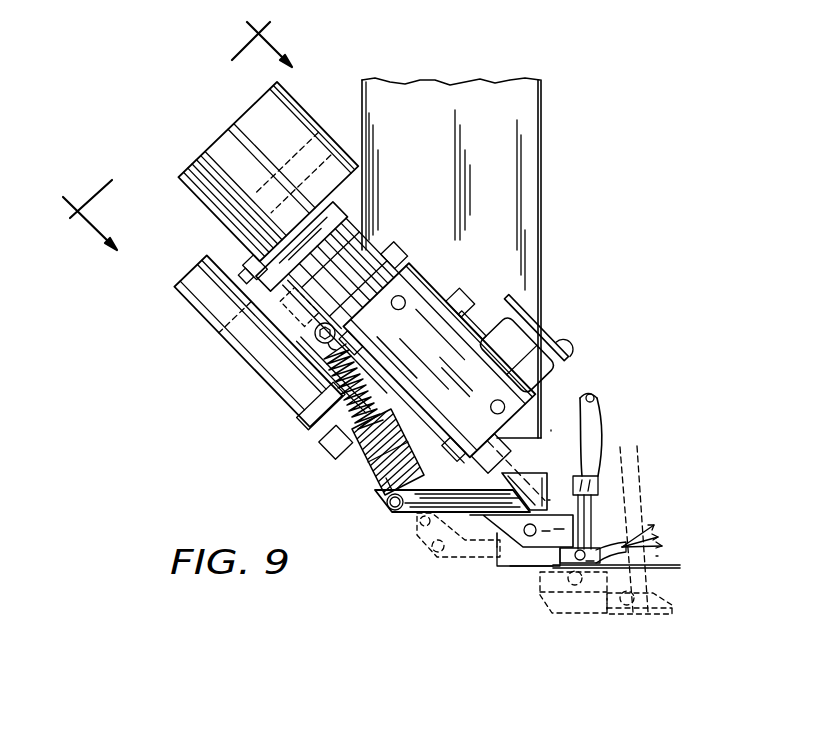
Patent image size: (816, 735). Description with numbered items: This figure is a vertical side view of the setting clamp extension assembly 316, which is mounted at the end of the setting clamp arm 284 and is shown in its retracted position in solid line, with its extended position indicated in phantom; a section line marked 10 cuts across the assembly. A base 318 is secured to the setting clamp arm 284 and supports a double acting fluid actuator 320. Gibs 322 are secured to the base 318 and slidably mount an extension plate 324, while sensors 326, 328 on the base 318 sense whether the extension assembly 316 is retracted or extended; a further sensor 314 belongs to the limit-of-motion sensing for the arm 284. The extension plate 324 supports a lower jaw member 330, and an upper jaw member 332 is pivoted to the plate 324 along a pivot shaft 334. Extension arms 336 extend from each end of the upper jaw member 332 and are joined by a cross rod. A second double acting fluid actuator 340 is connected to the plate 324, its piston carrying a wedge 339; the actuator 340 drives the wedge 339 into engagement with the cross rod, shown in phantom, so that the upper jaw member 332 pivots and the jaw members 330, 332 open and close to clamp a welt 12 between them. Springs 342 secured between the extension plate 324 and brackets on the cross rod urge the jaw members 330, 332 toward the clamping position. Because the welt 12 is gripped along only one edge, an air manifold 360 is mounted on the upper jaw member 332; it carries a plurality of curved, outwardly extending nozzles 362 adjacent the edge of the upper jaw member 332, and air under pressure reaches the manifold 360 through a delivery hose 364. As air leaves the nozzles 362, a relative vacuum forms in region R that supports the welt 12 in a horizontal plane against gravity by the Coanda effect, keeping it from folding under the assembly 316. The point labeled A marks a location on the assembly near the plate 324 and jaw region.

The section line 10- 10 is at (187, 146).
The welt 12 is at (672, 569).
The setting clamp arm 284 is at (497, 193).
The sensor 314 is at (337, 208).
The setting clamp extension assembly 316 is at (551, 428).
The base 318 is at (467, 372).
The double acting fluid actuator 320 is at (293, 130).
The gibs 322 is at (415, 383).
The extension plate 324 is at (517, 460).
The sensor 326 is at (540, 338).
The sensor 328 is at (540, 338).
The lower jaw member 330 is at (537, 567).
The upper jaw member 332 is at (590, 563).
The pivot shaft 334 is at (532, 535).
The extension arms 336 is at (423, 502).
The wedge 339 is at (363, 458).
The double acting fluid actuator 340 is at (250, 356).
The springs 342 is at (358, 452).
The air manifold 360 is at (581, 543).
The nozzles 362 is at (601, 552).
The delivery hose 364 is at (593, 428).
The point A is at (557, 500).
The region R is at (664, 556).